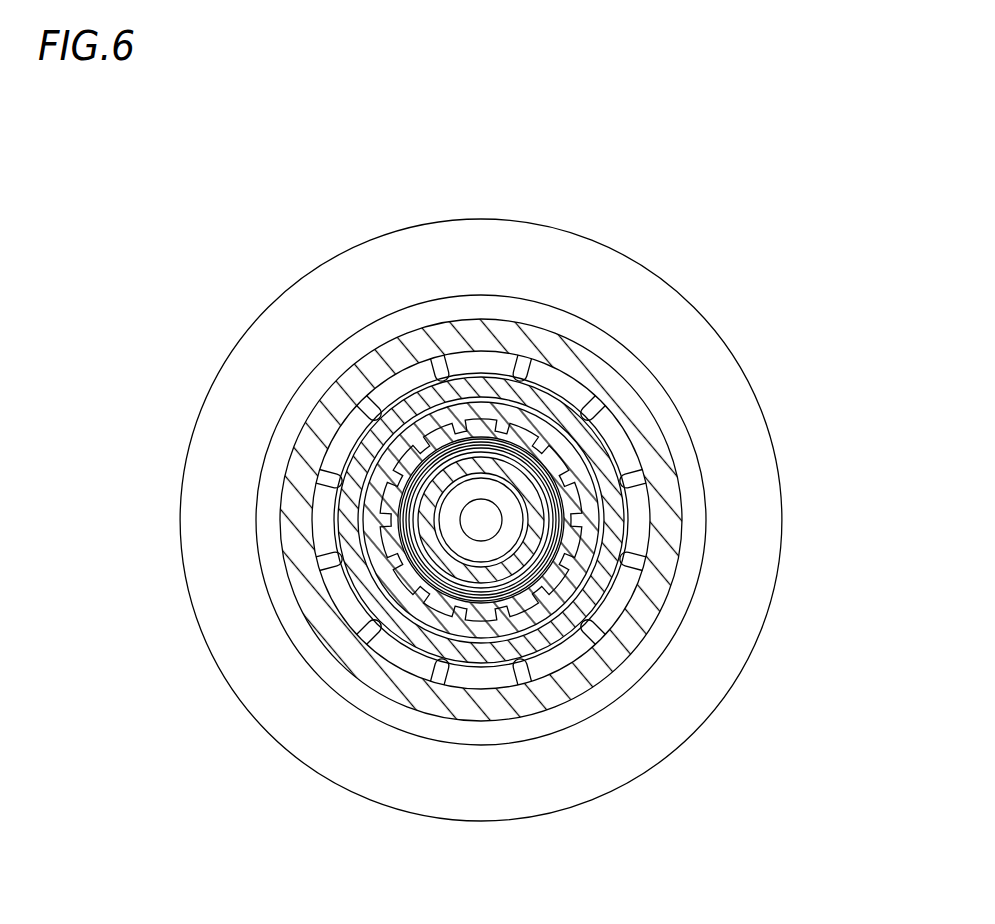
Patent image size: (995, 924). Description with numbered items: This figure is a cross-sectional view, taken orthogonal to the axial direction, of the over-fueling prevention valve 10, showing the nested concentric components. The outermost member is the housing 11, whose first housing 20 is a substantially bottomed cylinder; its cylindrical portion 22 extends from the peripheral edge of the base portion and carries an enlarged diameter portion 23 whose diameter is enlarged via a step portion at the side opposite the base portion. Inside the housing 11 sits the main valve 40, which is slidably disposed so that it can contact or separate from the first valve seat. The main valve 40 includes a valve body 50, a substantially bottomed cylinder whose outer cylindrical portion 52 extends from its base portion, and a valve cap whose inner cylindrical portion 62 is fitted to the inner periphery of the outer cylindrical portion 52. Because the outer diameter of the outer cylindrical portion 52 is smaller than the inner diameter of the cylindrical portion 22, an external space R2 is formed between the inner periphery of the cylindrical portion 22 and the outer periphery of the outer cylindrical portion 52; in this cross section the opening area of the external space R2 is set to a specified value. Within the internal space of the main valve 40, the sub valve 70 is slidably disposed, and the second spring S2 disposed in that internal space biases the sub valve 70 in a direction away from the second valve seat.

The over-fueling prevention valve 10 is at (425, 196).
The housing 11 is at (168, 565).
The first housing 20 is at (624, 326).
The cylindrical portion 22 is at (375, 670).
The enlarged diameter portion 23 is at (718, 683).
The main valve 40 is at (484, 360).
The valve body 50 is at (487, 680).
The outer cylindrical portion 52 is at (560, 635).
The inner cylindrical portion 62 is at (572, 454).
The sub valve 70 is at (535, 516).
The external space R2 is at (557, 373).
The second spring S2 is at (603, 578).